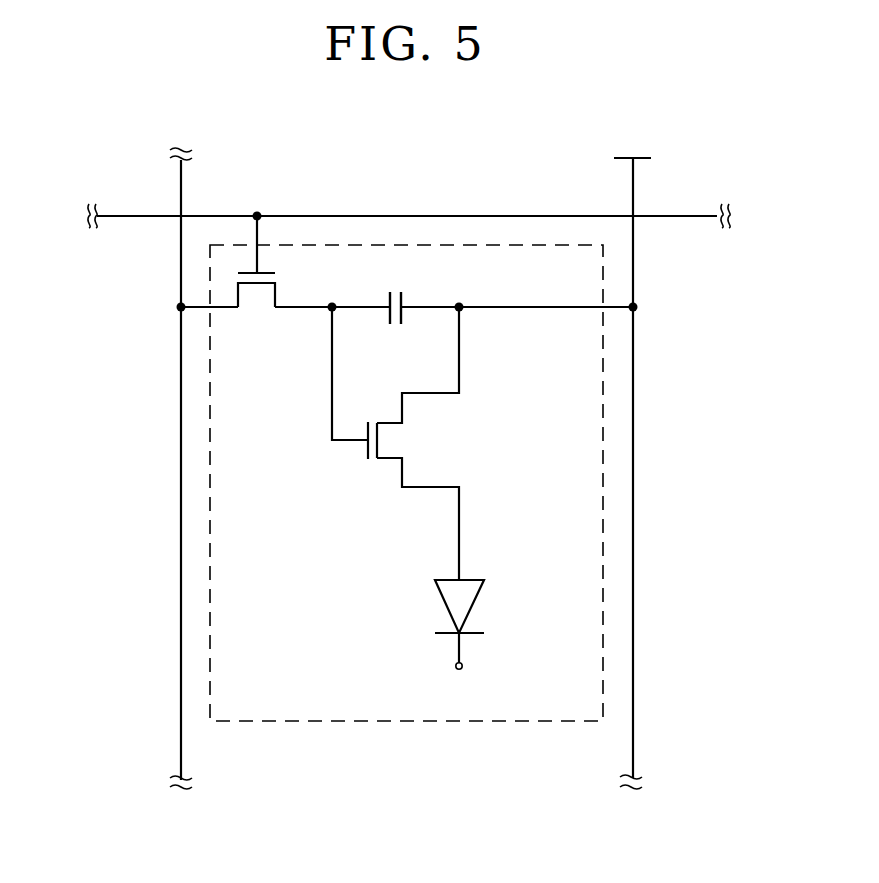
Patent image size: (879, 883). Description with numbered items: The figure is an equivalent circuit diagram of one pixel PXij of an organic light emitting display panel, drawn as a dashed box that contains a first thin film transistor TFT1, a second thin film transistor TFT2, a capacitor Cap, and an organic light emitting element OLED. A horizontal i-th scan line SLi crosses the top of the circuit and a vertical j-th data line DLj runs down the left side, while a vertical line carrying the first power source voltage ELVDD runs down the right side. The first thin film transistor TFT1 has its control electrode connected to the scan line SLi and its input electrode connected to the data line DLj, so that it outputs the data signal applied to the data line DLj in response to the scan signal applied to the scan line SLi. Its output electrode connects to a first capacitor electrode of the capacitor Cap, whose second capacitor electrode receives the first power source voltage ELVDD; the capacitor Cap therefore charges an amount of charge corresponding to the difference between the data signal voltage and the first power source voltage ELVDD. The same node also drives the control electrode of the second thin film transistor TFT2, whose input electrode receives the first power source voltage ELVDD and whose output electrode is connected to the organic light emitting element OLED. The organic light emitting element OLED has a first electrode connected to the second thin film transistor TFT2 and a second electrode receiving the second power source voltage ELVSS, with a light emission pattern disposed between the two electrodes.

The pixel PXij is at (320, 722).
The j-th data line DLj is at (181, 453).
The first power source voltage ELVDD is at (633, 457).
The i-th scan line SLi is at (385, 215).
The first thin film transistor TFT1 is at (257, 312).
The capacitor Cap is at (409, 279).
The second thin film transistor TFT2 is at (361, 462).
The organic light emitting element OLED is at (445, 608).
The second power source voltage ELVSS is at (459, 682).